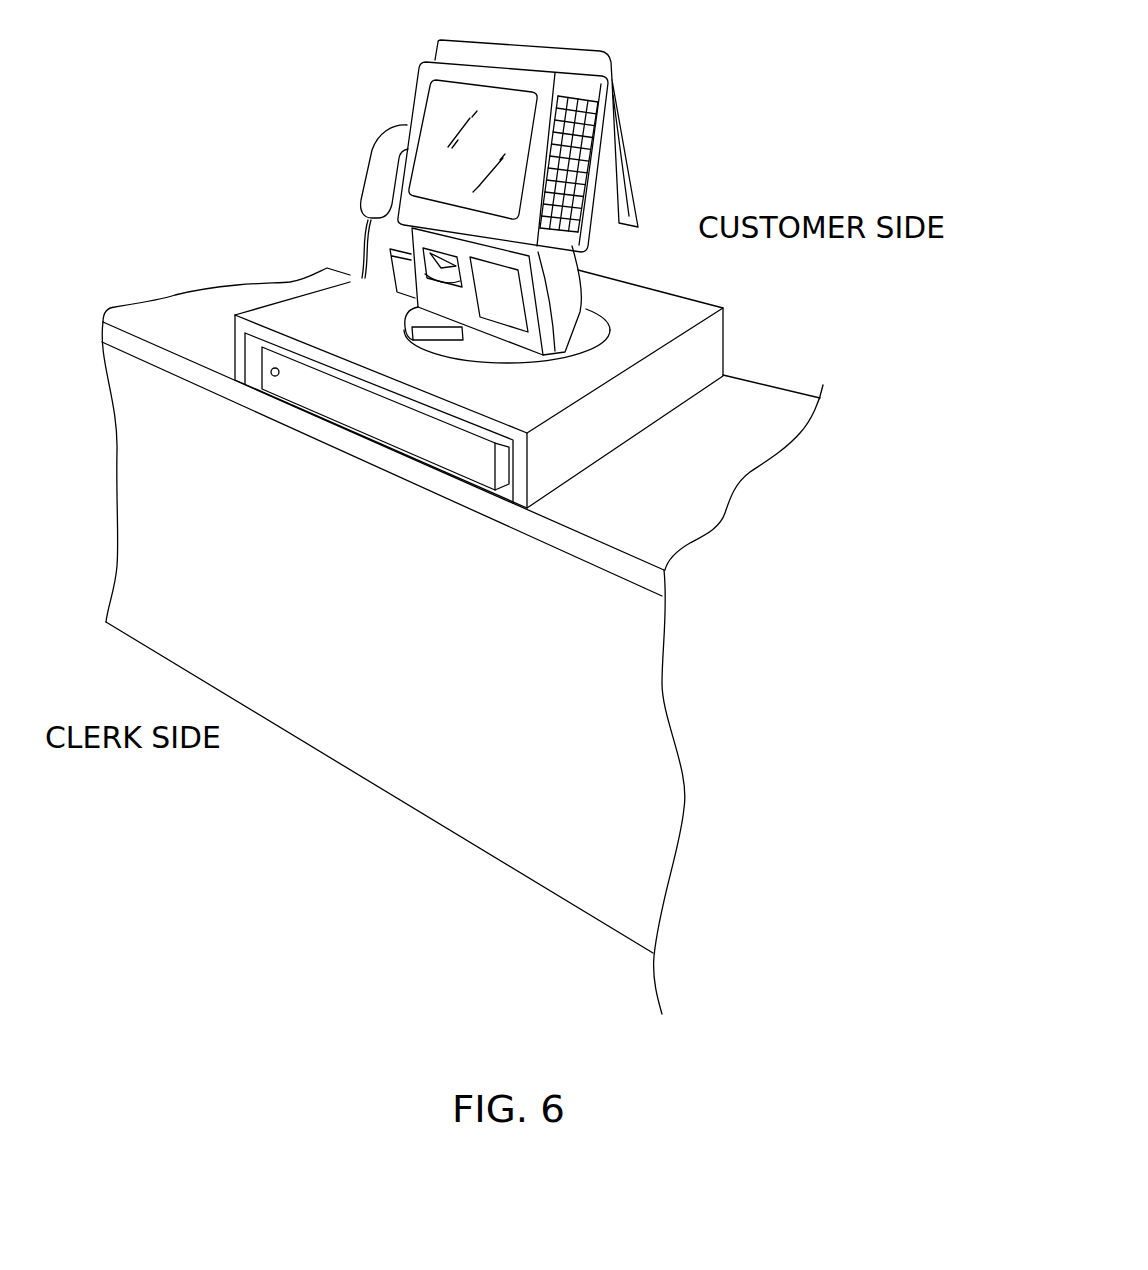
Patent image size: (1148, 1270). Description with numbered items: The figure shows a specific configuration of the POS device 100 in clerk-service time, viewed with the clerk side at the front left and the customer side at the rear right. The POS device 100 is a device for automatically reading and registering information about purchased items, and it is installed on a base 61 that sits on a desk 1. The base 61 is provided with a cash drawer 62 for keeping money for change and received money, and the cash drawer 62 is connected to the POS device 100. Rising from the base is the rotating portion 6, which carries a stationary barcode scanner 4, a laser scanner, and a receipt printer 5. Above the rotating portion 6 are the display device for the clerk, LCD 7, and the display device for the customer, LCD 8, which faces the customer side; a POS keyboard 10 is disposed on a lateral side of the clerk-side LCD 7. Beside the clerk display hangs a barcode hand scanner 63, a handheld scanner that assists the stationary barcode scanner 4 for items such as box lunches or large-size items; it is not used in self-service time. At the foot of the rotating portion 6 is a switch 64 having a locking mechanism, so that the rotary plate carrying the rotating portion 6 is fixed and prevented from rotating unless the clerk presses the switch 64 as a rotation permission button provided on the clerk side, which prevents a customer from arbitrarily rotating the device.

The POS device 100 is at (700, 101).
The desk 1 is at (645, 713).
The barcode scanner 4 is at (515, 312).
The receipt printer 5 is at (430, 268).
The rotating portion 6 is at (563, 285).
The LCD 7 is at (413, 117).
The LCD 8 is at (633, 180).
The POS keyboard 10 is at (613, 70).
The base 61 is at (695, 367).
The cash drawer 62 is at (435, 447).
The barcode hand scanner 63 is at (378, 170).
The switch 64 is at (435, 340).